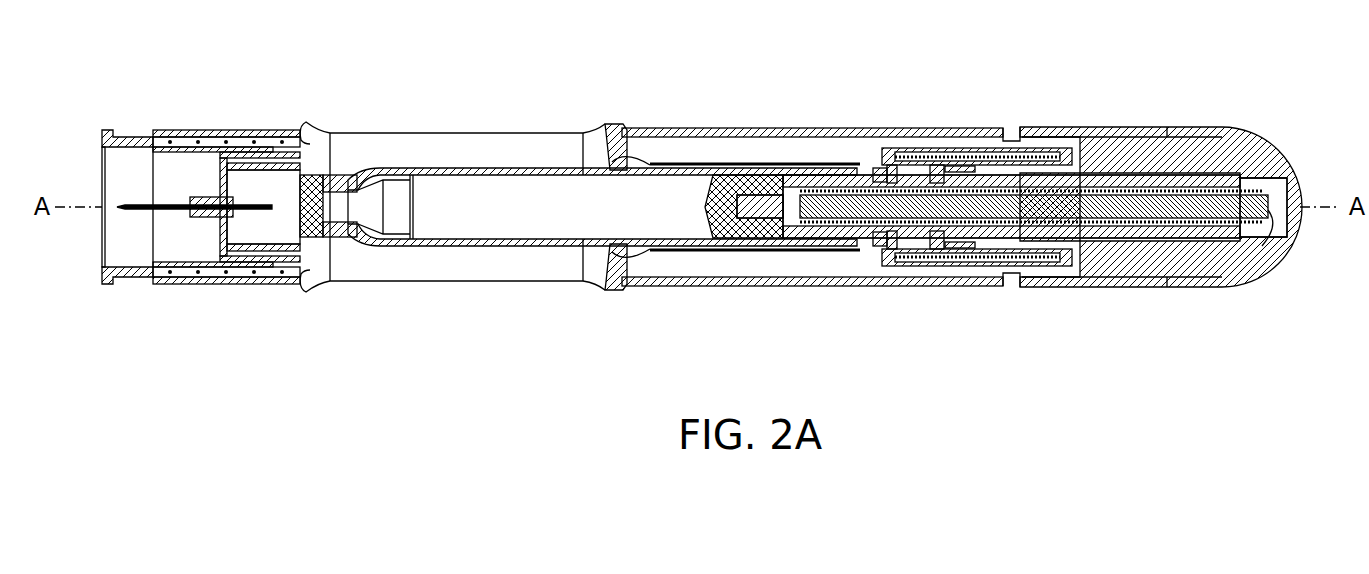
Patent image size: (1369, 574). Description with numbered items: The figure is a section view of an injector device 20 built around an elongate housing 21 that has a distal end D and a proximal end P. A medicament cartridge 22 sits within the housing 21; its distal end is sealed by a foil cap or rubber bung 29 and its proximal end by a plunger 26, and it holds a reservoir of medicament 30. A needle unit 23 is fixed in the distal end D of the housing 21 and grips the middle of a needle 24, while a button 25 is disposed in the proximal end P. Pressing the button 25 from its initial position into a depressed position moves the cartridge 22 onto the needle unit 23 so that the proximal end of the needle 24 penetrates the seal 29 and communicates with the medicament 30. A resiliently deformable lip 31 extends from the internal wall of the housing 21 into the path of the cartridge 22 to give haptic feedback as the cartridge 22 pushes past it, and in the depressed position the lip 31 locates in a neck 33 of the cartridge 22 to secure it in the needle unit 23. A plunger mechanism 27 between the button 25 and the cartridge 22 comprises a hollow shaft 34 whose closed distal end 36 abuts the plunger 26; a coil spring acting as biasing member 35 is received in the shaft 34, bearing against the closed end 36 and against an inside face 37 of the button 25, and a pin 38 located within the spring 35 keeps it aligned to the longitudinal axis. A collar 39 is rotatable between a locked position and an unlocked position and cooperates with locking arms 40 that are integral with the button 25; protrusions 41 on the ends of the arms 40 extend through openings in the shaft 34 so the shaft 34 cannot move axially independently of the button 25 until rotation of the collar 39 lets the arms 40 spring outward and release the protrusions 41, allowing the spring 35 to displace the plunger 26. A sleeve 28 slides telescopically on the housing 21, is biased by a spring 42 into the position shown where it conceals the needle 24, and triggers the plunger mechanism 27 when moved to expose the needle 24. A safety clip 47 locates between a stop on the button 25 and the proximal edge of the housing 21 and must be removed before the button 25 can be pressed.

The injector device 20 is at (668, 107).
The elongate housing 21 is at (731, 128).
The medicament cartridge 22 is at (490, 250).
The needle unit 23 is at (217, 233).
The needle 24 is at (143, 210).
The button 25 is at (1257, 150).
The plunger 26 is at (723, 246).
The plunger mechanism 27 is at (979, 146).
The sleeve 28 is at (120, 138).
The foil cap or rubber bung 29 is at (327, 212).
The medicament 30 is at (440, 183).
The lip 31 is at (313, 215).
The neck 33 is at (357, 225).
The shaft 34 is at (1163, 233).
The biasing member 35 is at (1125, 225).
The closed distal end 36 is at (762, 246).
The inside face 37 is at (1263, 247).
The pin 38 is at (1203, 210).
The collar 39 is at (935, 252).
The locking arms 40 is at (985, 250).
The protrusion 41 is at (910, 250).
The spring 42 is at (213, 132).
The safety clip 47 is at (1195, 128).
The distal end D is at (180, 130).
The proximal end P is at (1105, 128).